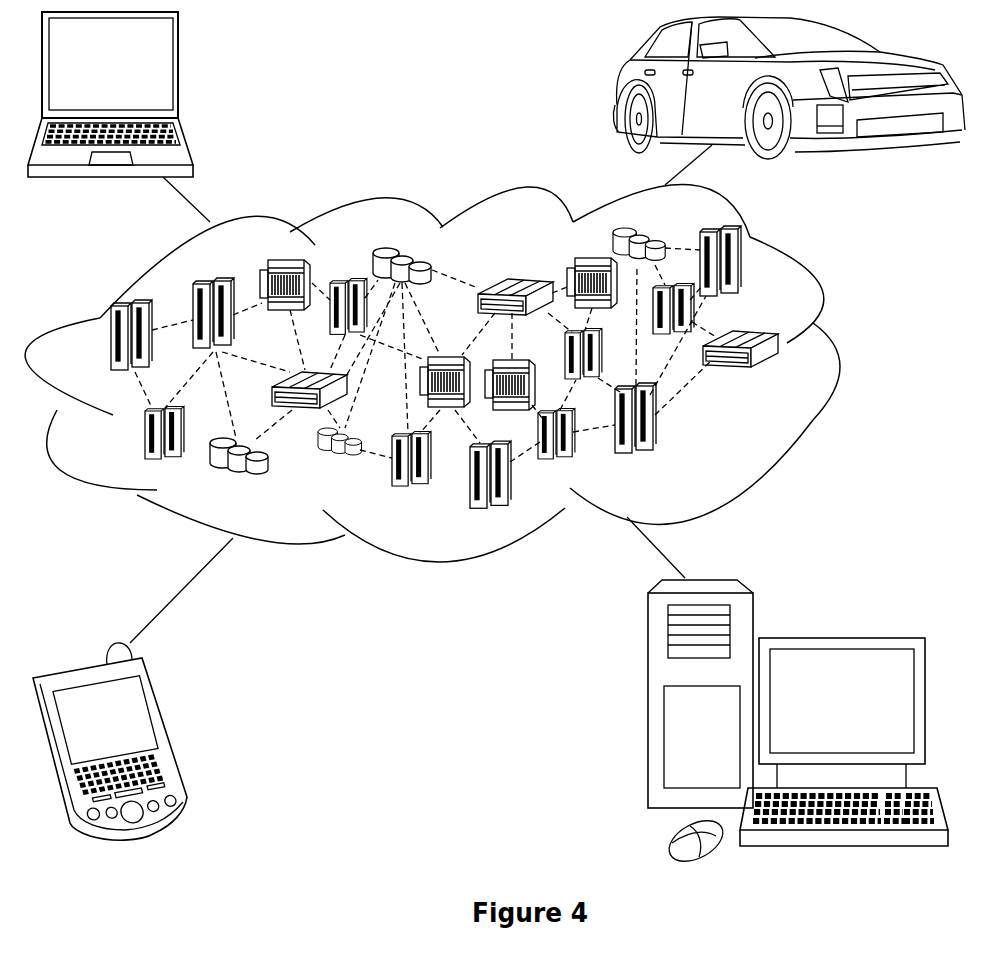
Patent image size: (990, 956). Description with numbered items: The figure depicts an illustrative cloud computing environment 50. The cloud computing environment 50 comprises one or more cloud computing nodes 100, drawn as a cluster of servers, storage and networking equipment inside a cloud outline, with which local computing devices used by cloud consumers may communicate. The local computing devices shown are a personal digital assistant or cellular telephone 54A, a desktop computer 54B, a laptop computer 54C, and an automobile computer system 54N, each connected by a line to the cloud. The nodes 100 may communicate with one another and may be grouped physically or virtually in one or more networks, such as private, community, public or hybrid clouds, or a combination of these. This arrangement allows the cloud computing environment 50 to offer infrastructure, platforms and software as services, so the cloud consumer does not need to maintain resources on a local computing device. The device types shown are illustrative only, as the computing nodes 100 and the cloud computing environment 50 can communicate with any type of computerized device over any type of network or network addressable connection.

The cloud computing environment 50 is at (838, 349).
The cloud computing nodes 100 is at (780, 378).
The personal digital assistant (PDA) or cellular telephone 54A is at (168, 736).
The desktop computer 54B is at (838, 637).
The laptop computer 54C is at (178, 73).
The automobile computer system 54N is at (620, 90).